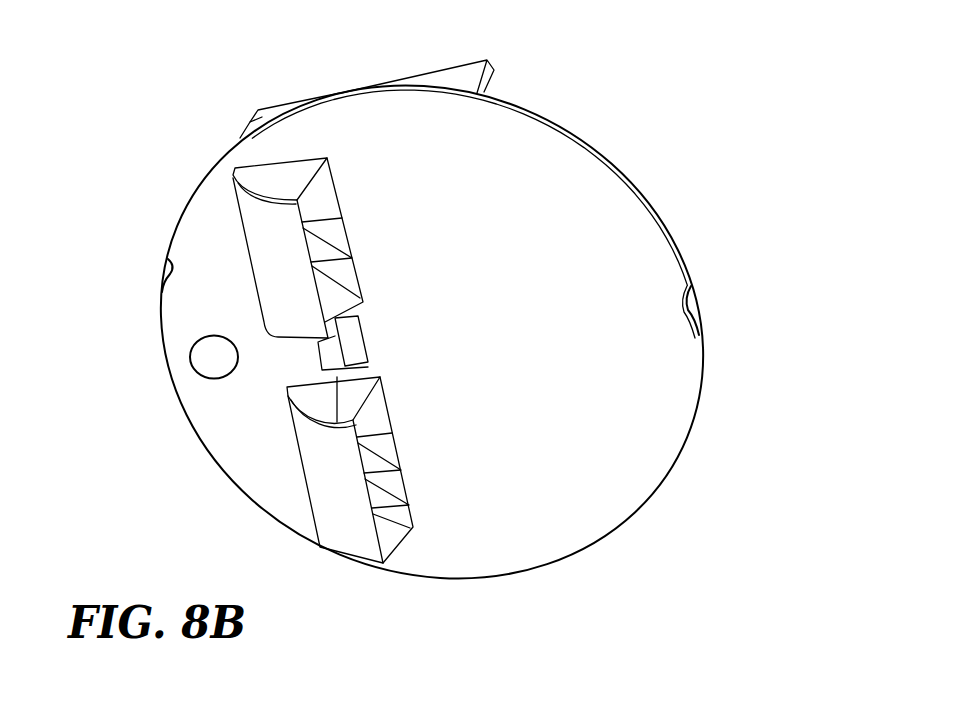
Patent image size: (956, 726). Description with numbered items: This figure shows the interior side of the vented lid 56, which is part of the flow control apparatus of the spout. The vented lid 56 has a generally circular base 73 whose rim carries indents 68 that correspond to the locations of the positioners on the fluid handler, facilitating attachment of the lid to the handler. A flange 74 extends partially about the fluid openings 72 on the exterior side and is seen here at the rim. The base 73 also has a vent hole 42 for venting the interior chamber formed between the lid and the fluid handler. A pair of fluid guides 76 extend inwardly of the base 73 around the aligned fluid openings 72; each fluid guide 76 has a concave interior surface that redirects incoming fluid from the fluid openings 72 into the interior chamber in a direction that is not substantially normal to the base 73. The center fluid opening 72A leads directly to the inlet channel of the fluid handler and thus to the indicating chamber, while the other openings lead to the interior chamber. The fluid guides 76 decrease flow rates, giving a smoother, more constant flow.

The vented lid 56 is at (690, 135).
The flange 74 is at (458, 76).
The indents 68 is at (156, 270).
The fluid openings 72 is at (350, 147).
The center fluid opening 72A is at (340, 348).
The base 73 is at (631, 403).
The fluid guides 76 is at (277, 284).
The vent hole 42 is at (185, 372).